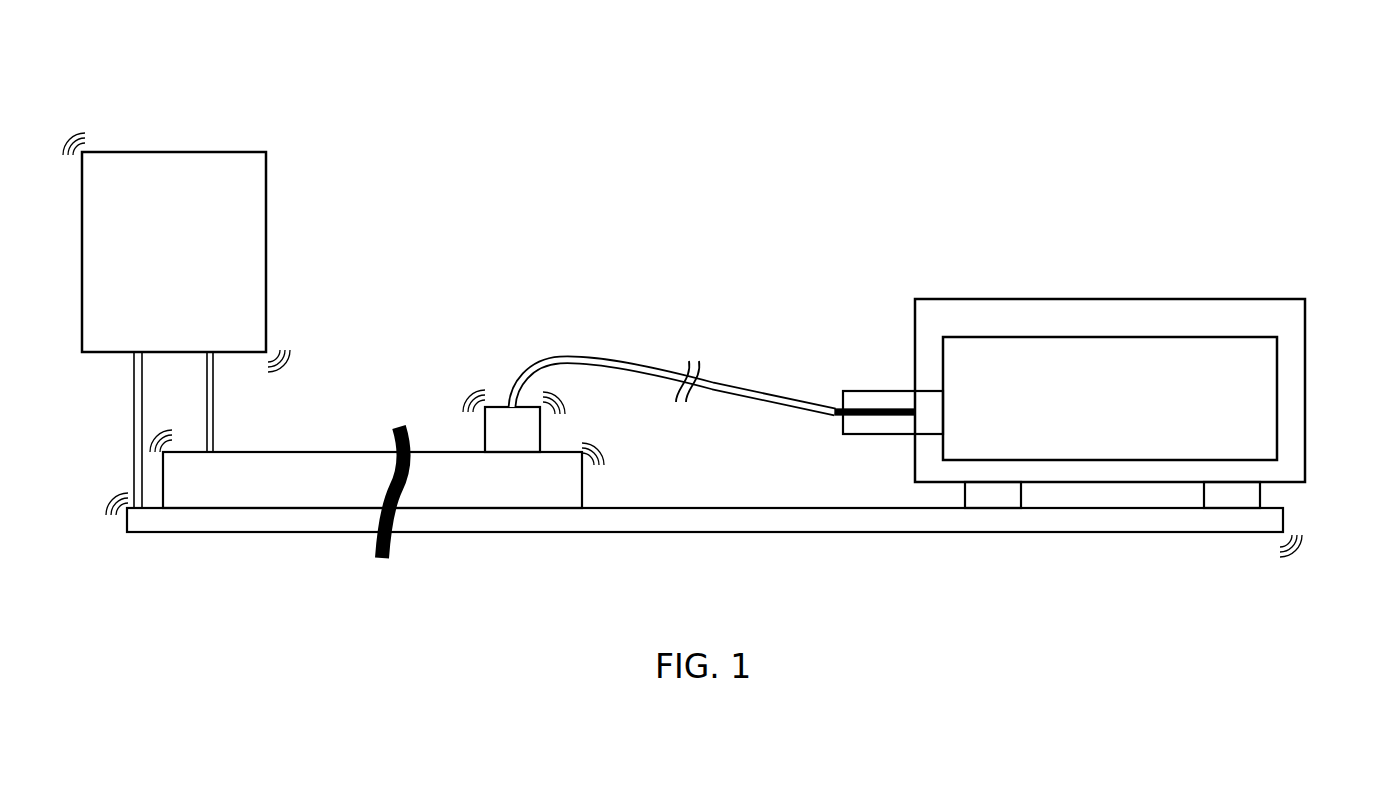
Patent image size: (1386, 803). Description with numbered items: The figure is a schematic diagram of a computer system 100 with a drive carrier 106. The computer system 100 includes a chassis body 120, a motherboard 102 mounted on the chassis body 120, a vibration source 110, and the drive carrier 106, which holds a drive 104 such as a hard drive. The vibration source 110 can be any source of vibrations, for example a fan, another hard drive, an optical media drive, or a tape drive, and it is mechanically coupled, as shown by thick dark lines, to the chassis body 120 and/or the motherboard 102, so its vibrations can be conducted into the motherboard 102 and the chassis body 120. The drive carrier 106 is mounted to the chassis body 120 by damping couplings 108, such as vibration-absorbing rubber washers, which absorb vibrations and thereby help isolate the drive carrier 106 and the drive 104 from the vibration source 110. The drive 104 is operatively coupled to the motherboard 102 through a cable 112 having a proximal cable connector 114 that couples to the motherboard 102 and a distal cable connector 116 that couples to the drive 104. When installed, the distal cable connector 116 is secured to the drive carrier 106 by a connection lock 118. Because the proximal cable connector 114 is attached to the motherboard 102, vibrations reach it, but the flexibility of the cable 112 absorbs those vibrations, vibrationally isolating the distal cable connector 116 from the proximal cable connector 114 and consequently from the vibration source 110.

The computer system 100 is at (98, 94).
The motherboard 102 is at (300, 452).
The drive 104 is at (1086, 337).
The drive carrier 106 is at (1200, 299).
The damping couplings 108 is at (1262, 498).
The vibration source 110 is at (266, 252).
The cable 112 is at (562, 355).
The proximal cable connector 114 is at (485, 430).
The distal cable connector 116 is at (867, 390).
The connection lock 118 is at (880, 418).
The chassis body 120 is at (257, 533).